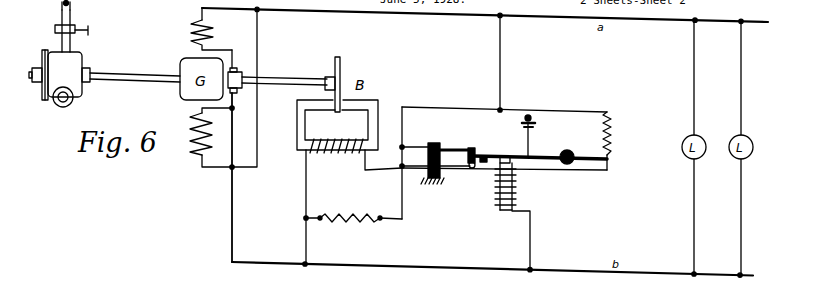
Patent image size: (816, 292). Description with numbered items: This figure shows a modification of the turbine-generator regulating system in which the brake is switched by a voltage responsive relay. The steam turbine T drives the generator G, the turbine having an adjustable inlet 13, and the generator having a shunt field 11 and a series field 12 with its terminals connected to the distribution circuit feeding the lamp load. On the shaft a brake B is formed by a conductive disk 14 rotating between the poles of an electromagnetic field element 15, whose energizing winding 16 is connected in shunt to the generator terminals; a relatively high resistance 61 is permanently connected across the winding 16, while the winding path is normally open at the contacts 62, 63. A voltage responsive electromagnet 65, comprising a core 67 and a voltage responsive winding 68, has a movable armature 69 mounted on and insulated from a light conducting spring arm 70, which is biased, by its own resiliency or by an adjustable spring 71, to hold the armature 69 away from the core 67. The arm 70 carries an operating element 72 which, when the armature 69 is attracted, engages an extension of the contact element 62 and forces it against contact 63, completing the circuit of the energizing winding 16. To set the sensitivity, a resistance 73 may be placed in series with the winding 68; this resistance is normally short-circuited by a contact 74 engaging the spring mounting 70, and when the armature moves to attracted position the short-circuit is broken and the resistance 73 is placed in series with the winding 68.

The shunt field 11 is at (191, 140).
The series field 12 is at (191, 36).
The inlet 13 is at (70, 10).
The disk 14 is at (341, 78).
The electromagnetic field element 15 is at (337, 125).
The winding 16 is at (338, 152).
The resistor 61 is at (350, 224).
The contact element 62 is at (456, 168).
The contact 63 is at (472, 169).
The voltage responsive electromagnet 65 is at (514, 186).
The core 67 is at (505, 213).
The voltage responsive winding 68 is at (499, 207).
The movable armature 69 is at (506, 157).
The spring arm 70 is at (556, 155).
The adjustable spring 71 is at (533, 146).
The operating element 72 is at (484, 152).
The resistance 73 is at (612, 144).
The contact 74 is at (458, 148).